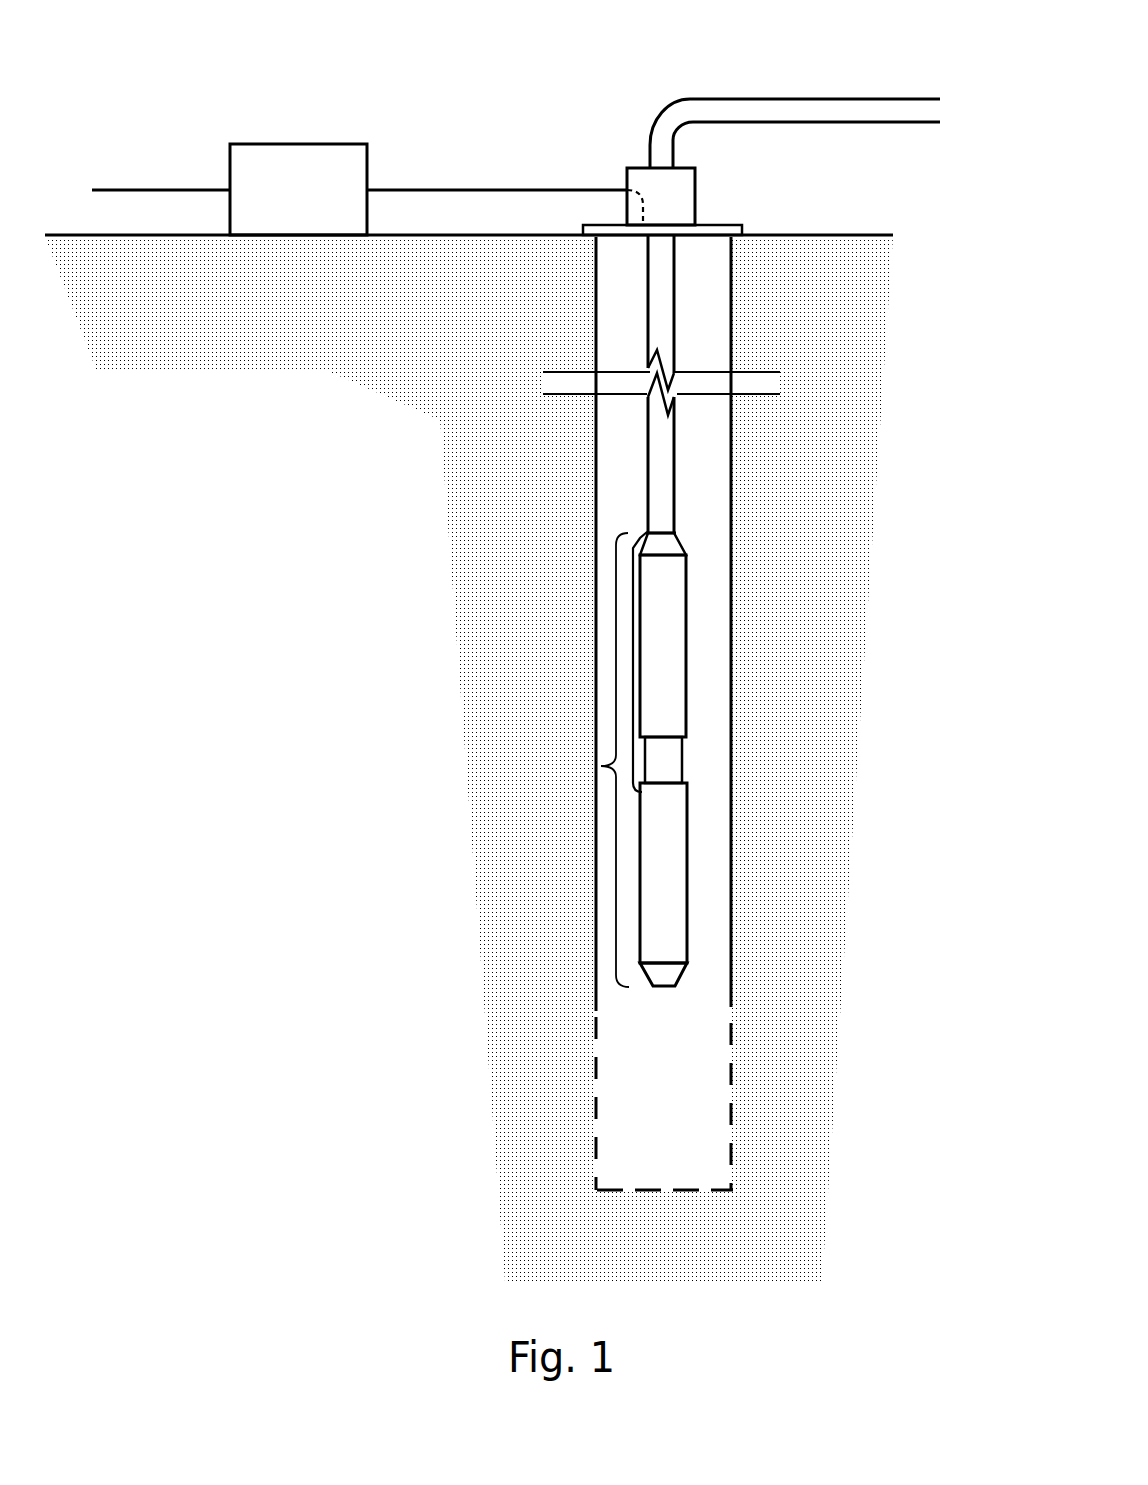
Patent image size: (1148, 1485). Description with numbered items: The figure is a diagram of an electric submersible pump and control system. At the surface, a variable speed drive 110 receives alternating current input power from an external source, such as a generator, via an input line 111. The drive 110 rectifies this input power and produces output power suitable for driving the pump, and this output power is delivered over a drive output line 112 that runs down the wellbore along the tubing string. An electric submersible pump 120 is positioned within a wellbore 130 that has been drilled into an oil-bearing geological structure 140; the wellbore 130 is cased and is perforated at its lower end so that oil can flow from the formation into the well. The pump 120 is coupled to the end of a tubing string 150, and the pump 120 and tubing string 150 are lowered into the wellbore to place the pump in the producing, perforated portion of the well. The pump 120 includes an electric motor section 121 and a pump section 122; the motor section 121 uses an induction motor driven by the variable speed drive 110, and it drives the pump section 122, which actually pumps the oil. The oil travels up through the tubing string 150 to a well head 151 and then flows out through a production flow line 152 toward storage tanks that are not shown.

The variable speed drive 110 is at (318, 143).
The input line 111 is at (150, 188).
The drive output line 112 is at (515, 188).
The electric submersible pump 120 is at (601, 766).
The electric motor section 121 is at (687, 955).
The pump section 122 is at (687, 577).
The wellbore 130 is at (731, 670).
The oil-bearing geological structure 140 is at (820, 881).
The tubing string 150 is at (673, 473).
The well head 151 is at (695, 189).
The production flow line 152 is at (805, 98).